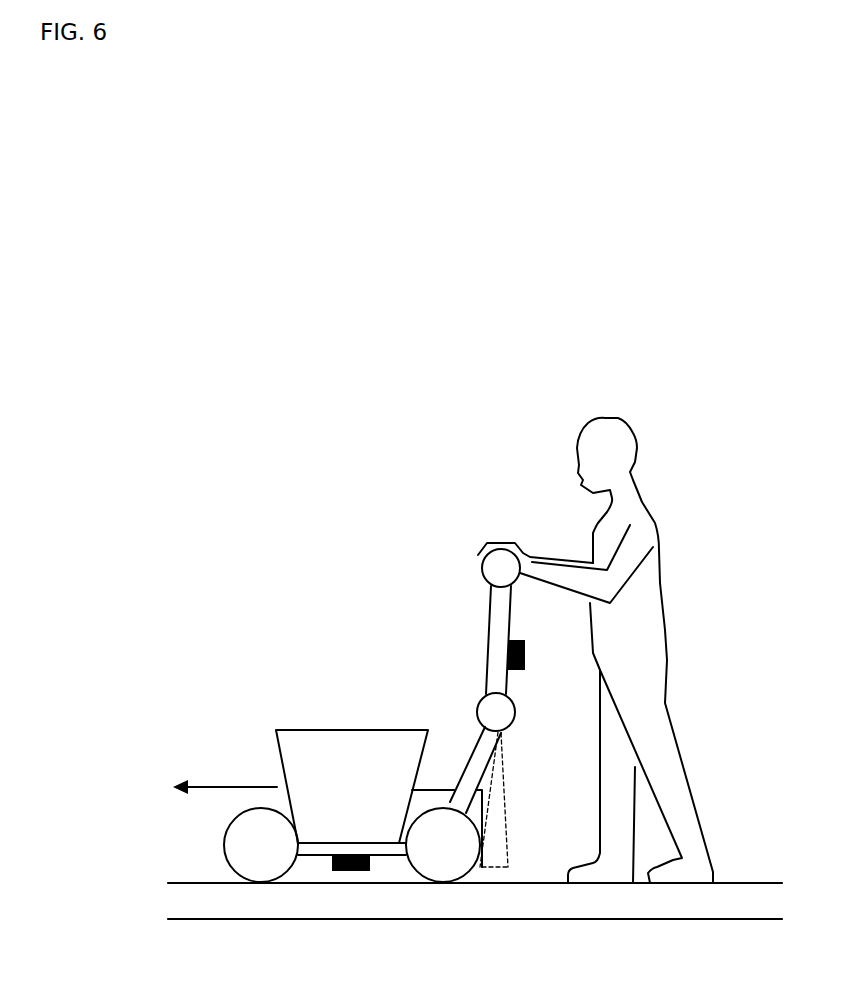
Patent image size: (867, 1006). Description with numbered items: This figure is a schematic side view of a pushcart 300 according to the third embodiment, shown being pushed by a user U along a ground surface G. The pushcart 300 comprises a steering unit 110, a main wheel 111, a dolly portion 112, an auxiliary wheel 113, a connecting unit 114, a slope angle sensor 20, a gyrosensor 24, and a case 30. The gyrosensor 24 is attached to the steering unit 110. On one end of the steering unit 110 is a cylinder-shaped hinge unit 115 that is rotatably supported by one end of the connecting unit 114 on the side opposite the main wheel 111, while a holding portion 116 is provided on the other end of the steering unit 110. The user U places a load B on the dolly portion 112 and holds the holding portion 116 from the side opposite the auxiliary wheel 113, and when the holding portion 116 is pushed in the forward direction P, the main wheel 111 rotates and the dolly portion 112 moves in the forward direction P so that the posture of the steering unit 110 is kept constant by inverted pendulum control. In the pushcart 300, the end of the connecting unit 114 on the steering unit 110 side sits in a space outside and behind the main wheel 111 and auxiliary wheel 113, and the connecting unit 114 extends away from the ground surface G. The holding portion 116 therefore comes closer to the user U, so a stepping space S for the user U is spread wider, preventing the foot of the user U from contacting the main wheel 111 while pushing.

The pushcart 300 is at (266, 568).
The steering unit 110 is at (498, 620).
The main wheel 111 is at (448, 863).
The dolly portion 112 is at (319, 853).
The auxiliary wheel 113 is at (258, 863).
The connecting unit 114 is at (480, 753).
The hinge unit 115 is at (490, 705).
The holding portion 116 is at (492, 570).
The slope angle sensor 20 is at (357, 871).
The gyrosensor 24 is at (525, 640).
The case 30 is at (480, 805).
The load B is at (351, 745).
The forward direction P is at (228, 787).
The user U is at (630, 440).
The stepping space S is at (505, 868).
The ground surface G is at (562, 900).